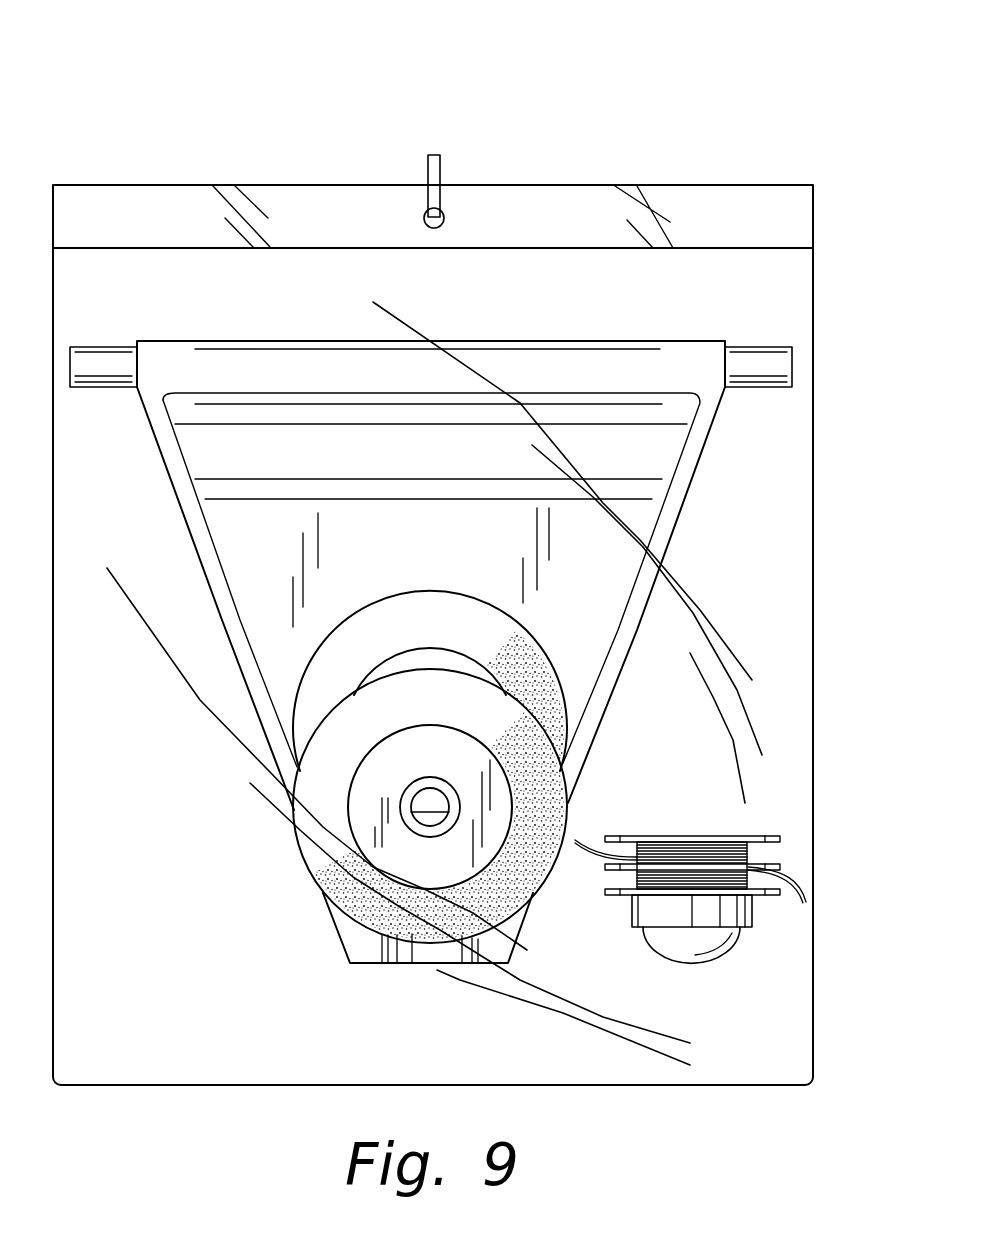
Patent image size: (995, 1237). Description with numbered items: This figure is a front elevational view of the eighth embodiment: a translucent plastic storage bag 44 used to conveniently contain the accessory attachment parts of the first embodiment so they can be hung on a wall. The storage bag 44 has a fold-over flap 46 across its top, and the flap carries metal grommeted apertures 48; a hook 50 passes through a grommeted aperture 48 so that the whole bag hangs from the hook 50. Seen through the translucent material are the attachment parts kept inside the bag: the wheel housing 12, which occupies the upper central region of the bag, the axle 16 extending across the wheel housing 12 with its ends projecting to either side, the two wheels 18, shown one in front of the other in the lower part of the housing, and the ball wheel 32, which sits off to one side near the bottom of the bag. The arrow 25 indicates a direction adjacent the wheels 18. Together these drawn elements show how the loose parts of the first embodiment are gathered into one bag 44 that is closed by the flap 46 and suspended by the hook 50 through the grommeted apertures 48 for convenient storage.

The wheel housing 12 is at (447, 547).
The axle 16 is at (762, 388).
The wheels 18 is at (558, 673).
The direction of rotation 25 is at (583, 886).
The ball wheel 32 is at (740, 948).
The translucent plastic storage bag 44 is at (224, 119).
The fold-over flap 46 is at (727, 213).
The metal grommeted apertures 48 is at (447, 217).
The hook 50 is at (428, 163).